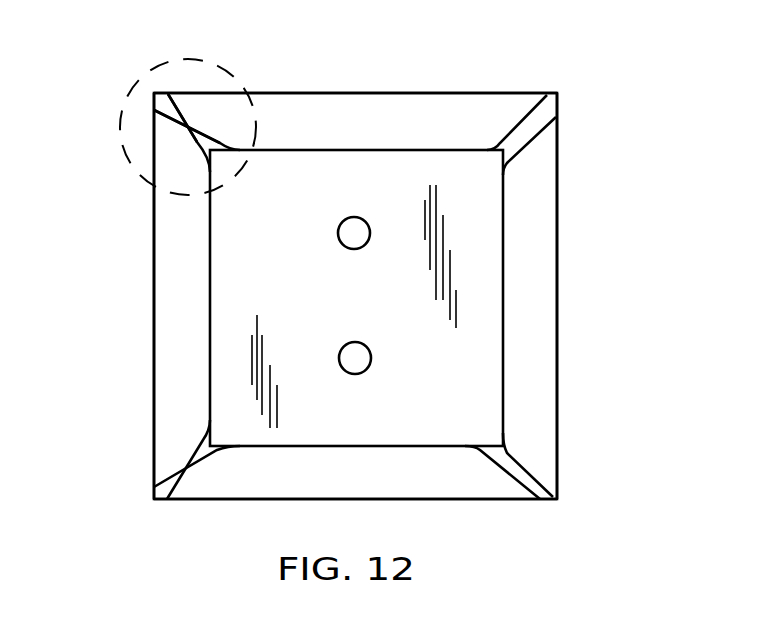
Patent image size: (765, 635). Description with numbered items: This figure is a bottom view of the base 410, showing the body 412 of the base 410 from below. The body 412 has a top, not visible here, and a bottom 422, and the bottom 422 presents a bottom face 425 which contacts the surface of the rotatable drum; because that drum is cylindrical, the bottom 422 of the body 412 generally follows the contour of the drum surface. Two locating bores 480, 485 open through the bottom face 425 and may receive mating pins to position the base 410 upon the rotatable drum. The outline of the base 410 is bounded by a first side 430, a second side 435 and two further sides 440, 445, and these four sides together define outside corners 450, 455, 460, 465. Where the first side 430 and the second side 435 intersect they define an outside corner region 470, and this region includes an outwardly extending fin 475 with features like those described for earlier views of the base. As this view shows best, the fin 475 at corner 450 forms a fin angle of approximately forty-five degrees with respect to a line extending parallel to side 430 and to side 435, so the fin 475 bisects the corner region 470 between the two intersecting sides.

The base 410 is at (289, 83).
The body 412 is at (437, 167).
The bottom 422 is at (480, 230).
The bottom face 425 is at (485, 275).
The first side 430 is at (153, 265).
The second side 435 is at (412, 93).
The side 440 is at (557, 352).
The side 445 is at (480, 500).
The outside corner 450 is at (157, 90).
The outside corner 455 is at (557, 105).
The outside corner 460 is at (560, 500).
The outside corner 465 is at (154, 497).
The outside corner region 470 is at (140, 166).
The outwardly extending fin 475 is at (173, 123).
The locating bore 480 is at (340, 240).
The locating bore 485 is at (372, 360).